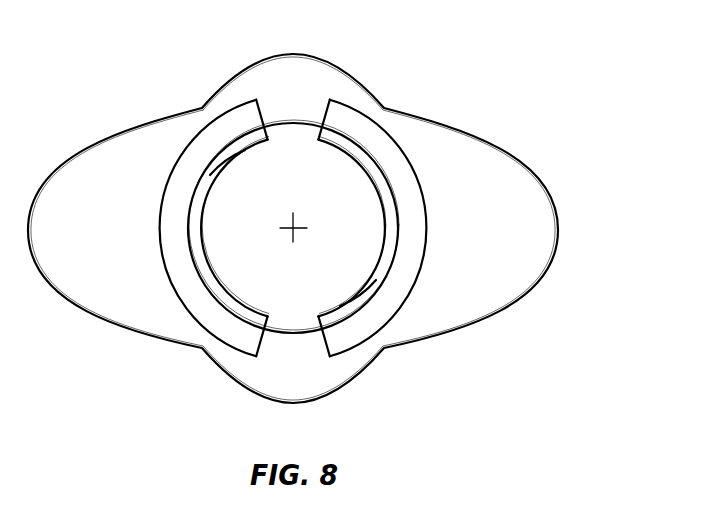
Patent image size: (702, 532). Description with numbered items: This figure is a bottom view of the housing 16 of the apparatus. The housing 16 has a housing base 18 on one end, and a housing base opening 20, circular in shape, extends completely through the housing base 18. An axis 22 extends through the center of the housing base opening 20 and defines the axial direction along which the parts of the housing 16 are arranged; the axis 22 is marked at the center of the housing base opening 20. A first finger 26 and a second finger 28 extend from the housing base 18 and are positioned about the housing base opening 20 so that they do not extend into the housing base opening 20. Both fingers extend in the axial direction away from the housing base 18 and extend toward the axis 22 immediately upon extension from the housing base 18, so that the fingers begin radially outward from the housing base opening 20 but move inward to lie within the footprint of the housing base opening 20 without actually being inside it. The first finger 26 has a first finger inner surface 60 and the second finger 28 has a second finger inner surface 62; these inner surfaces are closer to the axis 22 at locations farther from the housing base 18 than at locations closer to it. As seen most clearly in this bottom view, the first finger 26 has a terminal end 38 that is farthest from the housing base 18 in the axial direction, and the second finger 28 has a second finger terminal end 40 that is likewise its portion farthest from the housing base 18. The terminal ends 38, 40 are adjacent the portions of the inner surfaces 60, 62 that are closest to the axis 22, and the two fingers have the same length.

The housing 16 is at (540, 88).
The housing base 18 is at (535, 181).
The housing base opening 20 is at (343, 172).
The axis 22 is at (305, 224).
The first finger 26 is at (178, 188).
The second finger 28 is at (350, 338).
The terminal end 38 is at (228, 151).
The second finger terminal end 40 is at (393, 198).
The first finger inner surface 60 is at (231, 174).
The second finger inner surface 62 is at (355, 286).